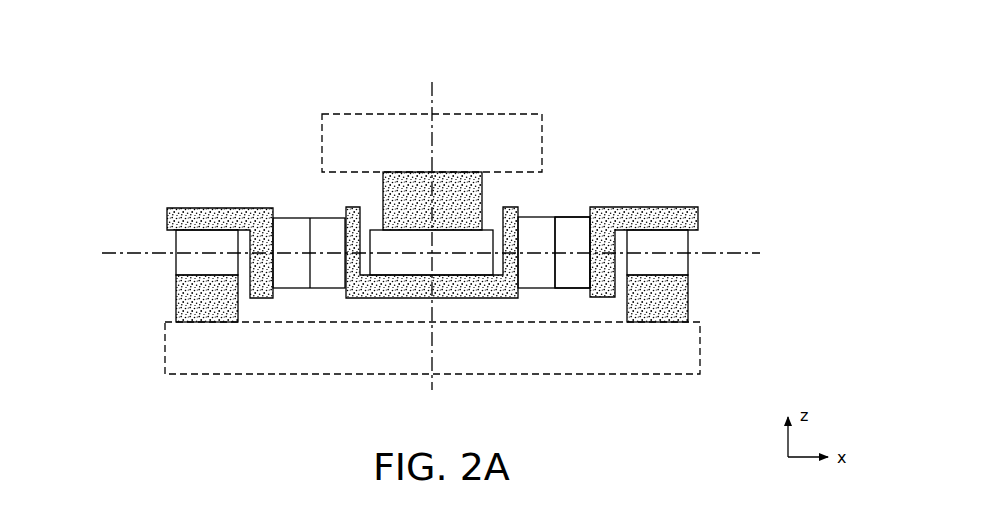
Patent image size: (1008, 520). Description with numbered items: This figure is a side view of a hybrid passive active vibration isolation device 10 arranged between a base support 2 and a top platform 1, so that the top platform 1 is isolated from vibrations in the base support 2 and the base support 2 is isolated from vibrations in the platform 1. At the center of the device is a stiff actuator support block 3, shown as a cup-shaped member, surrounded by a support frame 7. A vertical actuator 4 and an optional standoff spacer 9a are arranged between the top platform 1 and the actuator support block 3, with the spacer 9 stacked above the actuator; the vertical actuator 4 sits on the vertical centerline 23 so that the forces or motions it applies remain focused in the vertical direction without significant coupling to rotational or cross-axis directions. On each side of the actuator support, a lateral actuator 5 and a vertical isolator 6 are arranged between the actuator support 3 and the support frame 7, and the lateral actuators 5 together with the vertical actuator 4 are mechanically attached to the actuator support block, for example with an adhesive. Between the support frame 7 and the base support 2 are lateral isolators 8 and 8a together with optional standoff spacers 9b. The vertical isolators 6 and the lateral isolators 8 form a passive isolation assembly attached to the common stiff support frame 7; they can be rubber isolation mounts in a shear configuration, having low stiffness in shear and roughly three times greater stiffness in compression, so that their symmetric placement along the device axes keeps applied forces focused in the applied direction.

The top platform 1 is at (486, 127).
The base support 2 is at (707, 353).
The actuator support block 3 is at (340, 205).
The vertical actuator 4 is at (452, 265).
The lateral actuator 5 is at (541, 233).
The vertical isolator 6 is at (578, 210).
The support frame 7 is at (724, 229).
The lateral isolator 8 is at (696, 265).
The lateral isolator 8a is at (183, 245).
The spacer 9 is at (680, 303).
The standoff spacer 9a is at (490, 201).
The standoff spacer 9b is at (170, 284).
The vibration isolation device 10 is at (273, 81).
The vertical centerline 23 is at (430, 92).